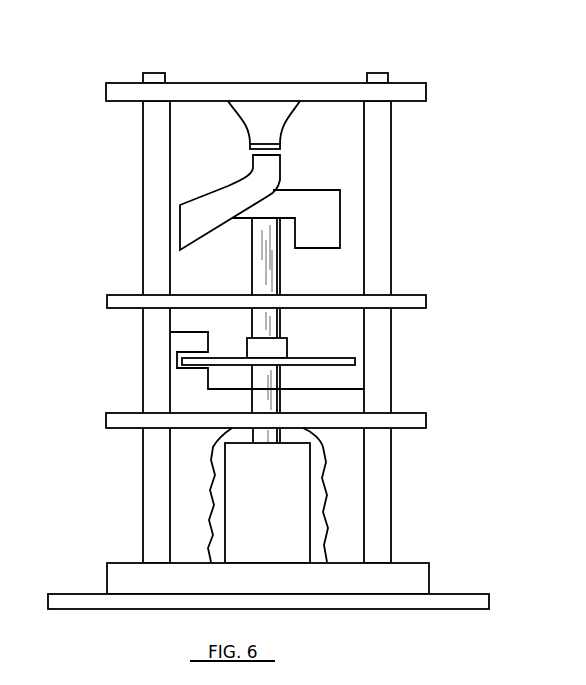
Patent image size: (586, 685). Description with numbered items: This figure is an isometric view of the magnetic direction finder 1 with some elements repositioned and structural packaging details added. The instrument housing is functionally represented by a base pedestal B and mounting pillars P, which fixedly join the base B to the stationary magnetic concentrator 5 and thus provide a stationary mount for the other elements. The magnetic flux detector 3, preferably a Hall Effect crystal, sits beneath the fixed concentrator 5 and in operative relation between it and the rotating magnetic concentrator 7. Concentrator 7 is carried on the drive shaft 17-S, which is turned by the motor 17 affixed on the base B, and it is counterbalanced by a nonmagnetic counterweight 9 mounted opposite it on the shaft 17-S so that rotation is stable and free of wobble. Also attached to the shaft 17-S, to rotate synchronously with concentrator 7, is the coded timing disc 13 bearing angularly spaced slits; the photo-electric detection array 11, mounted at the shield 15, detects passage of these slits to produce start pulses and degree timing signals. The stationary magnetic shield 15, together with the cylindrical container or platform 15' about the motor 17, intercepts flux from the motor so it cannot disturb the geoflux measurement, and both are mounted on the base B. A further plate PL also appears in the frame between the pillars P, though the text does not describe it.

The magnetic direction finder 1 is at (462, 120).
The magnetic flux detector 3 is at (282, 146).
The stationary magnetic concentrator 5 is at (272, 110).
The rotating magnetic concentrator 7 is at (217, 207).
The nonmagnetic counterweight 9 is at (327, 203).
The photo-electric detection array 11 is at (183, 347).
The coded timing disc 13 is at (307, 360).
The magnetic shield 15 is at (295, 414).
The cylindrical container 15' is at (124, 332).
The motor 17 is at (268, 495).
The drive shaft 17-S is at (268, 325).
The mounting pillars P is at (152, 73).
The plate PL is at (108, 423).
The base pedestal B is at (460, 602).